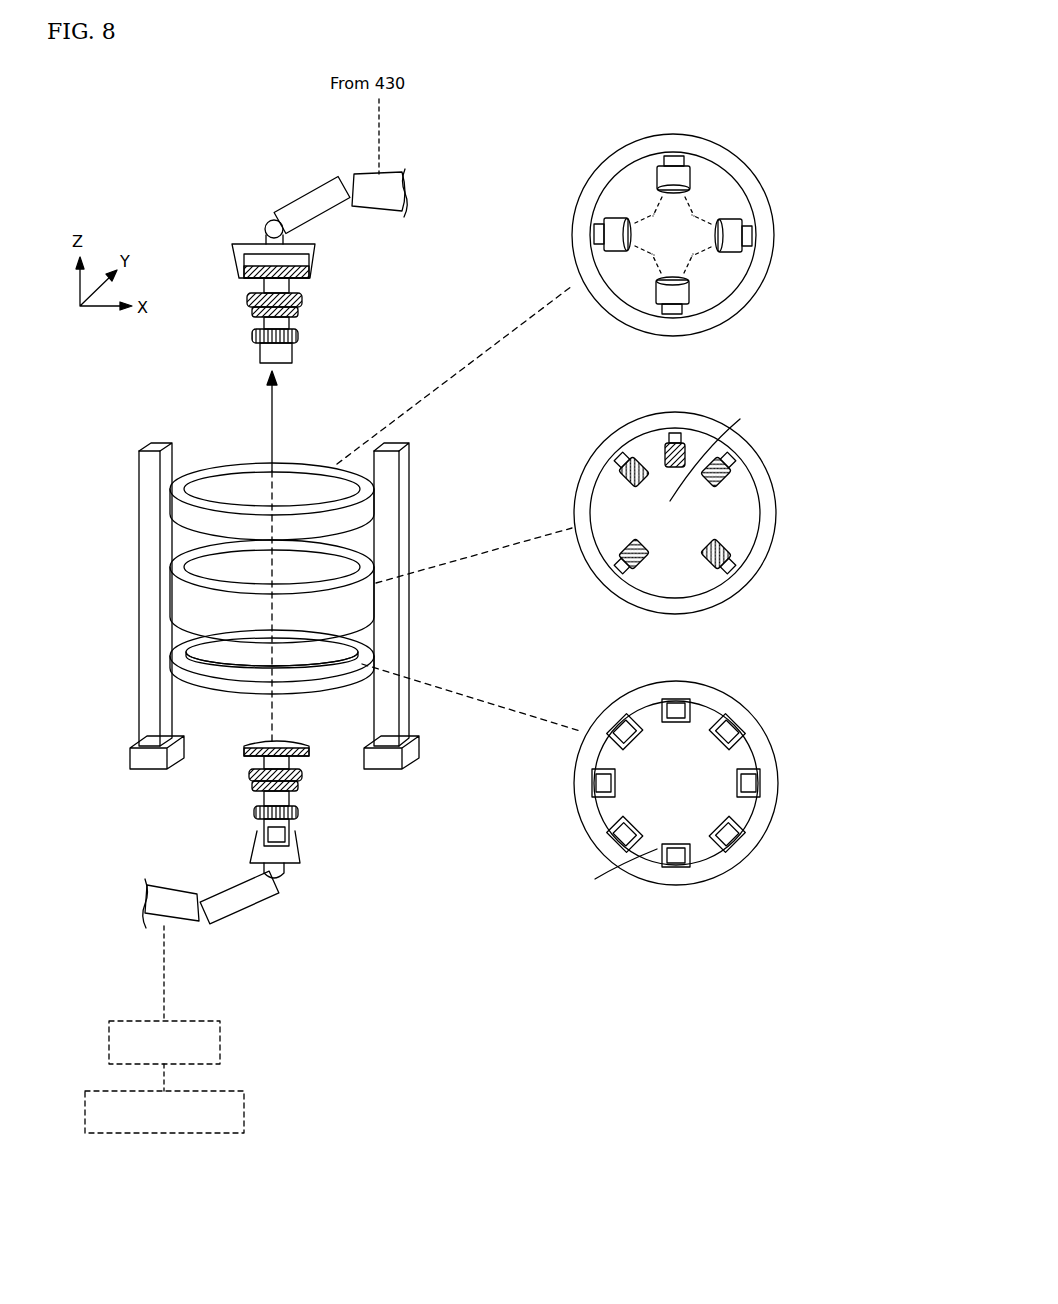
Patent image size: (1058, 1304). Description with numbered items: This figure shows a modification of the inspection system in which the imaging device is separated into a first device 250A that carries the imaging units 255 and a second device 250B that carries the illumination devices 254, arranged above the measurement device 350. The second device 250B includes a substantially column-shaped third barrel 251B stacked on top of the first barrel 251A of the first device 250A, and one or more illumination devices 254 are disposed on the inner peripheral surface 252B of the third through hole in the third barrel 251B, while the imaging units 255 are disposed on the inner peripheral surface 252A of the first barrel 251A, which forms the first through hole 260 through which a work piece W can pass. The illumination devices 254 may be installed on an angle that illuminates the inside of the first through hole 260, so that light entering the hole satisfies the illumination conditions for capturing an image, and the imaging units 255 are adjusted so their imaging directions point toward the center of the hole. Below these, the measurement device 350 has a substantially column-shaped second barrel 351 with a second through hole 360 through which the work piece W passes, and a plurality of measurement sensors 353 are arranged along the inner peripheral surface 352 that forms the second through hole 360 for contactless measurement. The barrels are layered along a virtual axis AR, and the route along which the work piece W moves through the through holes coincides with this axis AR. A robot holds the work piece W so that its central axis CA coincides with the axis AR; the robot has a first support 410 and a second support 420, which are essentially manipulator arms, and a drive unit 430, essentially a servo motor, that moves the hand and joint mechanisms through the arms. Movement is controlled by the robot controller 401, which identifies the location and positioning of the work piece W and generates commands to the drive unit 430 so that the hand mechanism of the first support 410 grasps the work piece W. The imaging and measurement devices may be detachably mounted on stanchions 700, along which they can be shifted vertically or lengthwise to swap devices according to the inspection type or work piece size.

The second support 420 is at (296, 200).
The drive unit 430 is at (220, 1043).
The robot controller 401 is at (244, 1112).
The first support 410 is at (246, 905).
The stanchions 700 is at (148, 444).
The second device 250B is at (160, 508).
The first device 250A is at (172, 592).
The measurement device 350 is at (330, 688).
The work piece W is at (300, 312).
The central axis CA is at (288, 326).
The virtual axis AR is at (272, 410).
The third barrel 251B is at (618, 156).
The inner peripheral surface 252B is at (646, 156).
The illumination devices 254 is at (690, 172).
The first barrel 251A is at (620, 435).
The inner peripheral surface 252A is at (648, 437).
The first through hole 260 is at (718, 446).
The imaging units 255 is at (618, 478).
The second barrel 351 is at (630, 697).
The inner peripheral surface 352 is at (700, 853).
The measurement sensors 353 is at (672, 700).
The second through hole 360 is at (606, 872).